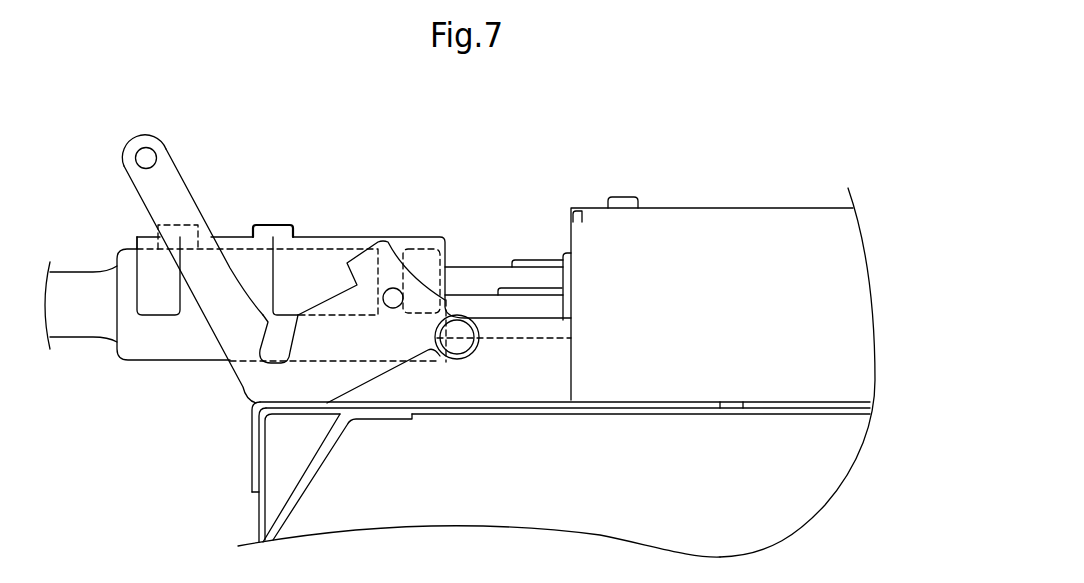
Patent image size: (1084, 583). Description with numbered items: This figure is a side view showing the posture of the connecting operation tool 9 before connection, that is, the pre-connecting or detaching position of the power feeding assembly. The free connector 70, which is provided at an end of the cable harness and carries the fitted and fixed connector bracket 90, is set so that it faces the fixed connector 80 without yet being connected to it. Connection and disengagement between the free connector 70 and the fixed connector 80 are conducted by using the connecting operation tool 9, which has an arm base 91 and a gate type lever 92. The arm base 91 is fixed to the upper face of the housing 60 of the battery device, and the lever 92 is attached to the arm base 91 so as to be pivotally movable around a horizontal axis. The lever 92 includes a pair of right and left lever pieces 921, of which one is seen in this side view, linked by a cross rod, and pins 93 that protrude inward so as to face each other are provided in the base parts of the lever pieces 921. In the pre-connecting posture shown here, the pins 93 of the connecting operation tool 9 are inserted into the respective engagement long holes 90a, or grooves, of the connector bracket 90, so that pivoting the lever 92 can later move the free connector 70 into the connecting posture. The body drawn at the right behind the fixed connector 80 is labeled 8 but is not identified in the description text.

The main body / housing block 8 is at (752, 207).
The connecting operation tool 9 is at (342, 264).
The housing 60 is at (237, 525).
The free connector 70 is at (247, 267).
The fixed connector 80 is at (523, 275).
The connector bracket 90 is at (320, 237).
The engagement long hole 90a is at (392, 237).
The arm base 91 is at (518, 377).
The lever 92 is at (296, 283).
The lever piece 921 is at (243, 377).
The pin 93 is at (397, 296).